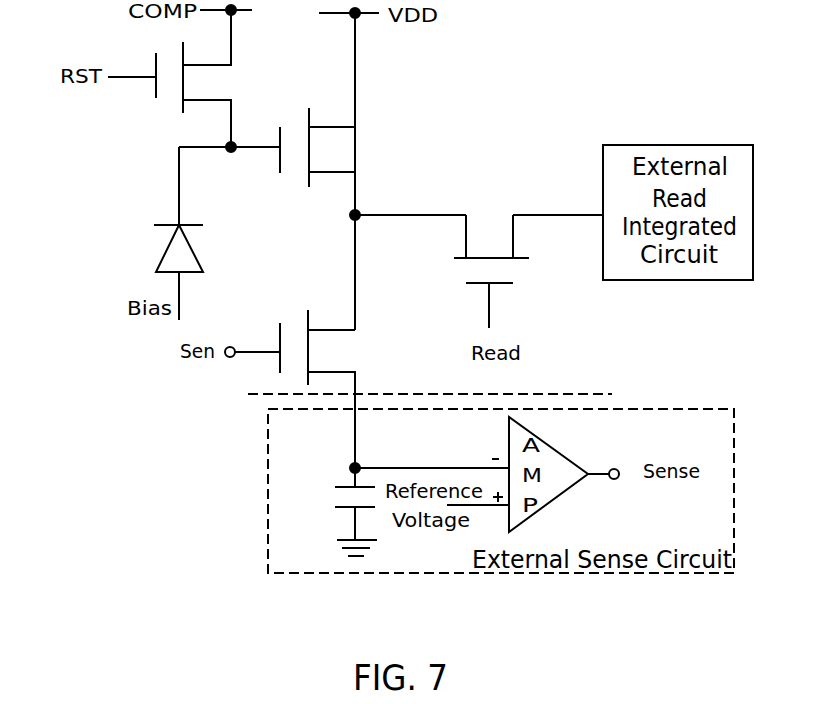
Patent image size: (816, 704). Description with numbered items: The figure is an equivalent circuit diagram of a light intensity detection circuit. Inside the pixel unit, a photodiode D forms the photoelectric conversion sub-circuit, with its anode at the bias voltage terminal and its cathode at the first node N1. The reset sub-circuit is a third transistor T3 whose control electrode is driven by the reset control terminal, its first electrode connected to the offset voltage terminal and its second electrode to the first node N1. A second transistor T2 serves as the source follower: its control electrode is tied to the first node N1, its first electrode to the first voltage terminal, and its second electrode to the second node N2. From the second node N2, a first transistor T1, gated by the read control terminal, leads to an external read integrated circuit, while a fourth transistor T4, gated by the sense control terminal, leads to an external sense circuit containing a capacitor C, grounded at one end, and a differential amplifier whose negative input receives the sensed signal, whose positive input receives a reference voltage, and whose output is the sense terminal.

The first transistor T1 is at (528, 258).
The second transistor T2 is at (336, 147).
The third transistor T3 is at (189, 94).
The fourth transistor T4 is at (308, 389).
The photodiode D is at (192, 233).
The capacitor C is at (342, 509).
The first node N1 is at (229, 162).
The second node N2 is at (388, 215).